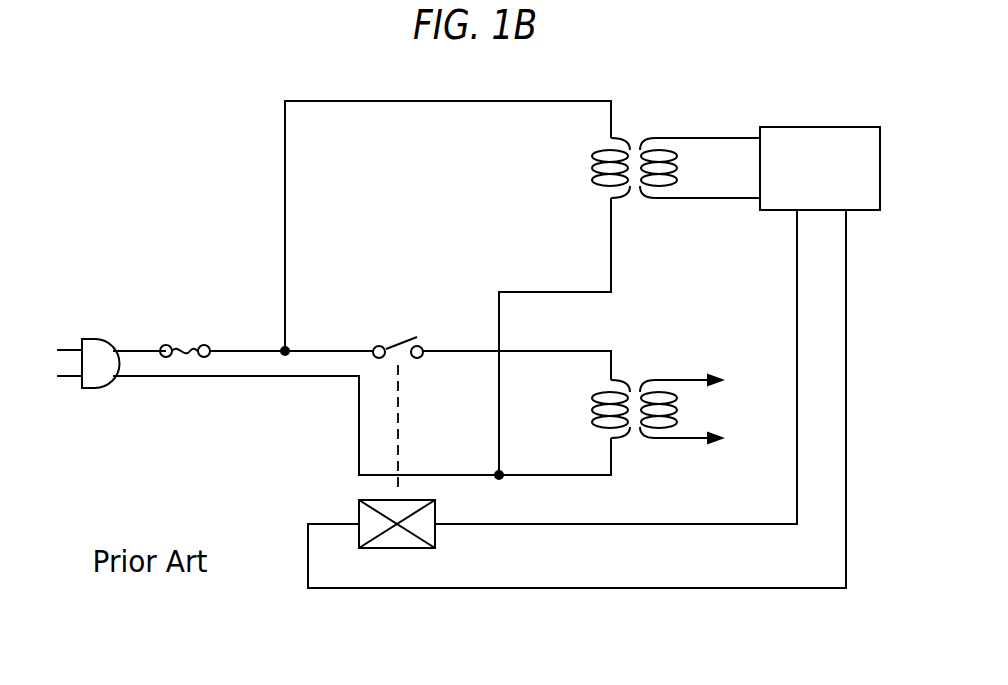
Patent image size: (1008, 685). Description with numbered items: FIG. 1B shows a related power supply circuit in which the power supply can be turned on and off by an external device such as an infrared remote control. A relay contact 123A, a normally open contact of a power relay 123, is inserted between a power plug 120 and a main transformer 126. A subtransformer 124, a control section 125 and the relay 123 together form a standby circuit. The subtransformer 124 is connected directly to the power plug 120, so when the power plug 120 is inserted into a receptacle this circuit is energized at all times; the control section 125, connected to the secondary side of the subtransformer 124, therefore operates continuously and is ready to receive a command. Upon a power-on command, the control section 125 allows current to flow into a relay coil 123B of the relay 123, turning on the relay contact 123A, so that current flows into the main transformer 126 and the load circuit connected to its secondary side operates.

The power plug 120 is at (88, 340).
The power relay 123 is at (352, 464).
The relay contact 123A is at (407, 335).
The relay coil 123B is at (397, 550).
The subtransformer 124 is at (634, 141).
The control section 125 is at (829, 127).
The main transformer 126 is at (634, 382).